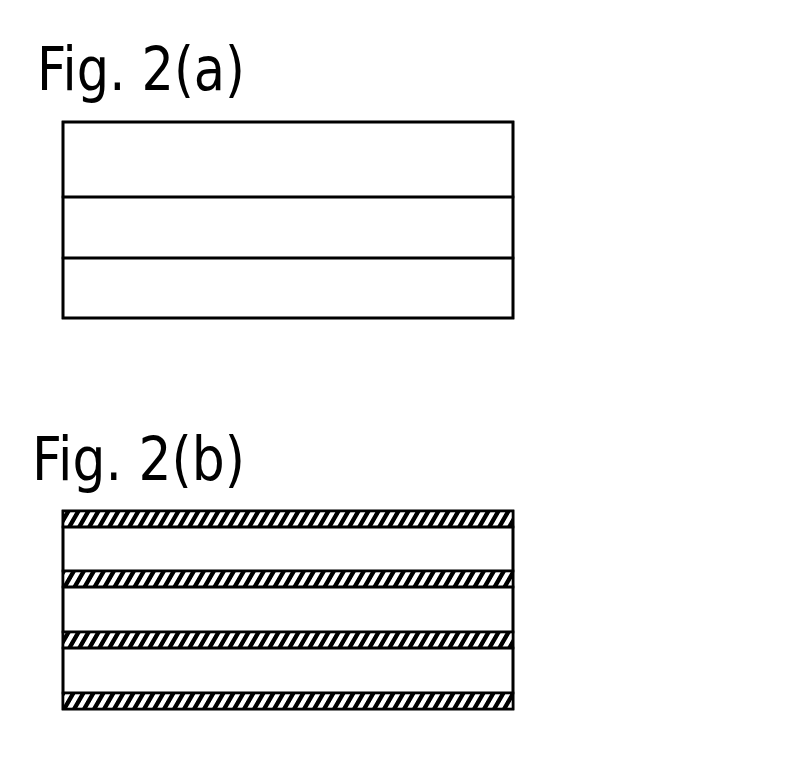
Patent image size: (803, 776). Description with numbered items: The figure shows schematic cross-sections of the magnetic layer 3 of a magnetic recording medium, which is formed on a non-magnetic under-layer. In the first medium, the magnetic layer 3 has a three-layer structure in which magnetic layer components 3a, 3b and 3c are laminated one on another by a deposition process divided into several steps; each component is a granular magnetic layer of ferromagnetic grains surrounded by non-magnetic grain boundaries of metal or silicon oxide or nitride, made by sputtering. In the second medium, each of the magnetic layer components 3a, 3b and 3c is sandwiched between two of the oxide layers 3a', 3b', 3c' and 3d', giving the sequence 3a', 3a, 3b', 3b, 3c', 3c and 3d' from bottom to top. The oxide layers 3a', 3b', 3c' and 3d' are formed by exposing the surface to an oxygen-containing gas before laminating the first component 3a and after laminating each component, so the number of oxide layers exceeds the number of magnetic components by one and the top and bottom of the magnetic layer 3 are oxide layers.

In FIG. 2A, the magnetic layer 3 is at (622, 117).
In FIG. 2B, the magnetic layer 3 is at (674, 453).
In FIG. 2A, the magnetic layer component 3a is at (334, 287).
In FIG. 2B, the magnetic layer component 3a is at (333, 666).
In FIG. 2A, the magnetic layer component 3b is at (335, 226).
In FIG. 2B, the magnetic layer component 3b is at (333, 606).
In FIG. 2A, the magnetic layer component 3c is at (333, 159).
In FIG. 2B, the magnetic layer component 3c is at (331, 545).
In FIG. 2B, the oxide layer 3a' is at (364, 691).
In FIG. 2B, the oxide layer 3b' is at (365, 624).
In FIG. 2B, the oxide layer 3c' is at (363, 563).
In FIG. 2B, the oxide layer 3d' is at (365, 496).